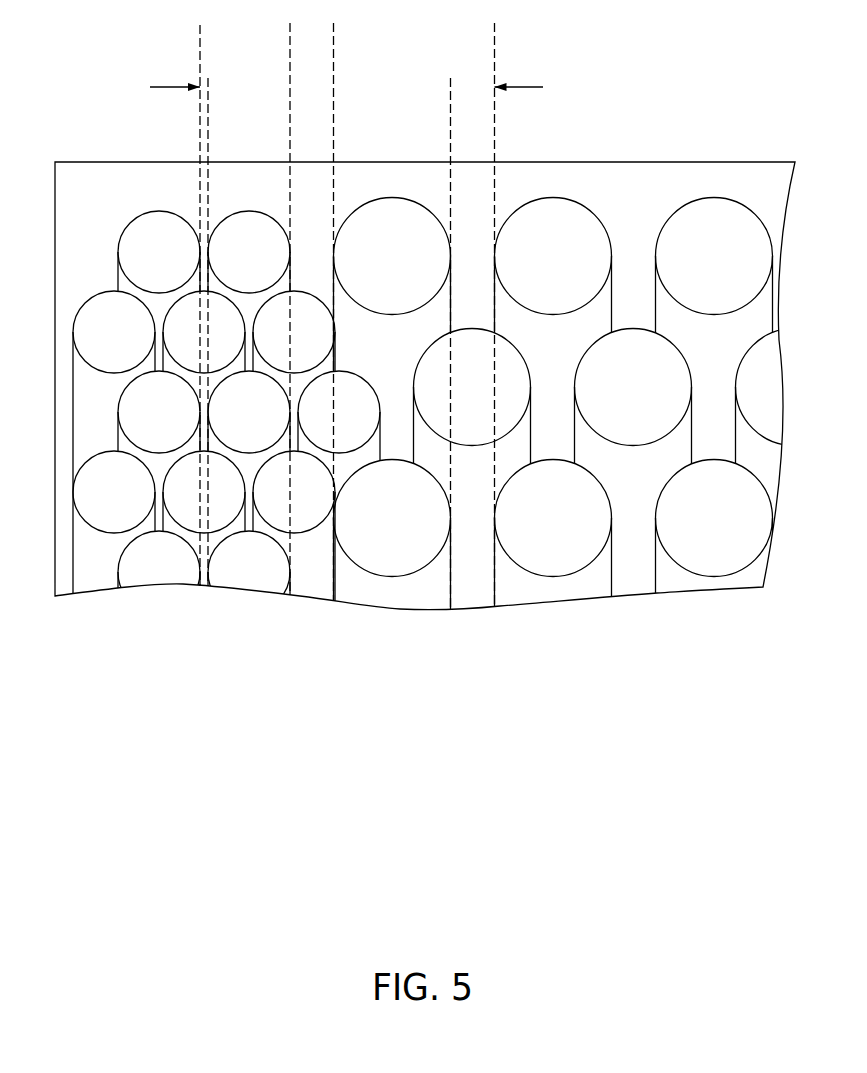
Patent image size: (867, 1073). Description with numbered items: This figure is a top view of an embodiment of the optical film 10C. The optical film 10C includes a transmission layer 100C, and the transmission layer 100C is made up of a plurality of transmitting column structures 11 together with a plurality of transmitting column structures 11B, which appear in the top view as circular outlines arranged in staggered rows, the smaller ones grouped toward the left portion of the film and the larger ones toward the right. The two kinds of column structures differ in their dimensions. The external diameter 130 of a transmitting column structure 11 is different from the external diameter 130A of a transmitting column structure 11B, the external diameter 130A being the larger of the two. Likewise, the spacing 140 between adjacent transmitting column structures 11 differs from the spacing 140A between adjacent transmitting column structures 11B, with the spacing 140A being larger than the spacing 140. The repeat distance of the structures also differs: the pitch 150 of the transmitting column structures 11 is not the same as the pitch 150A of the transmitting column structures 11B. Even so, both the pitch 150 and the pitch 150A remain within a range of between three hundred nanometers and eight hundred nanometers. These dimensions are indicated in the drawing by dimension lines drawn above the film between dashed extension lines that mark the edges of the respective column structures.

The optical film 10C is at (147, 71).
The transmitting column structure 11 is at (98, 317).
The transmitting column structure 11B is at (553, 235).
The transmission layer 100C is at (190, 200).
The external diameter 130 is at (290, 87).
The spacing 140 is at (203, 87).
The pitch 150 is at (290, 32).
The external diameter 130A is at (450, 87).
The spacing 140A is at (473, 86).
The pitch 150A is at (494, 32).